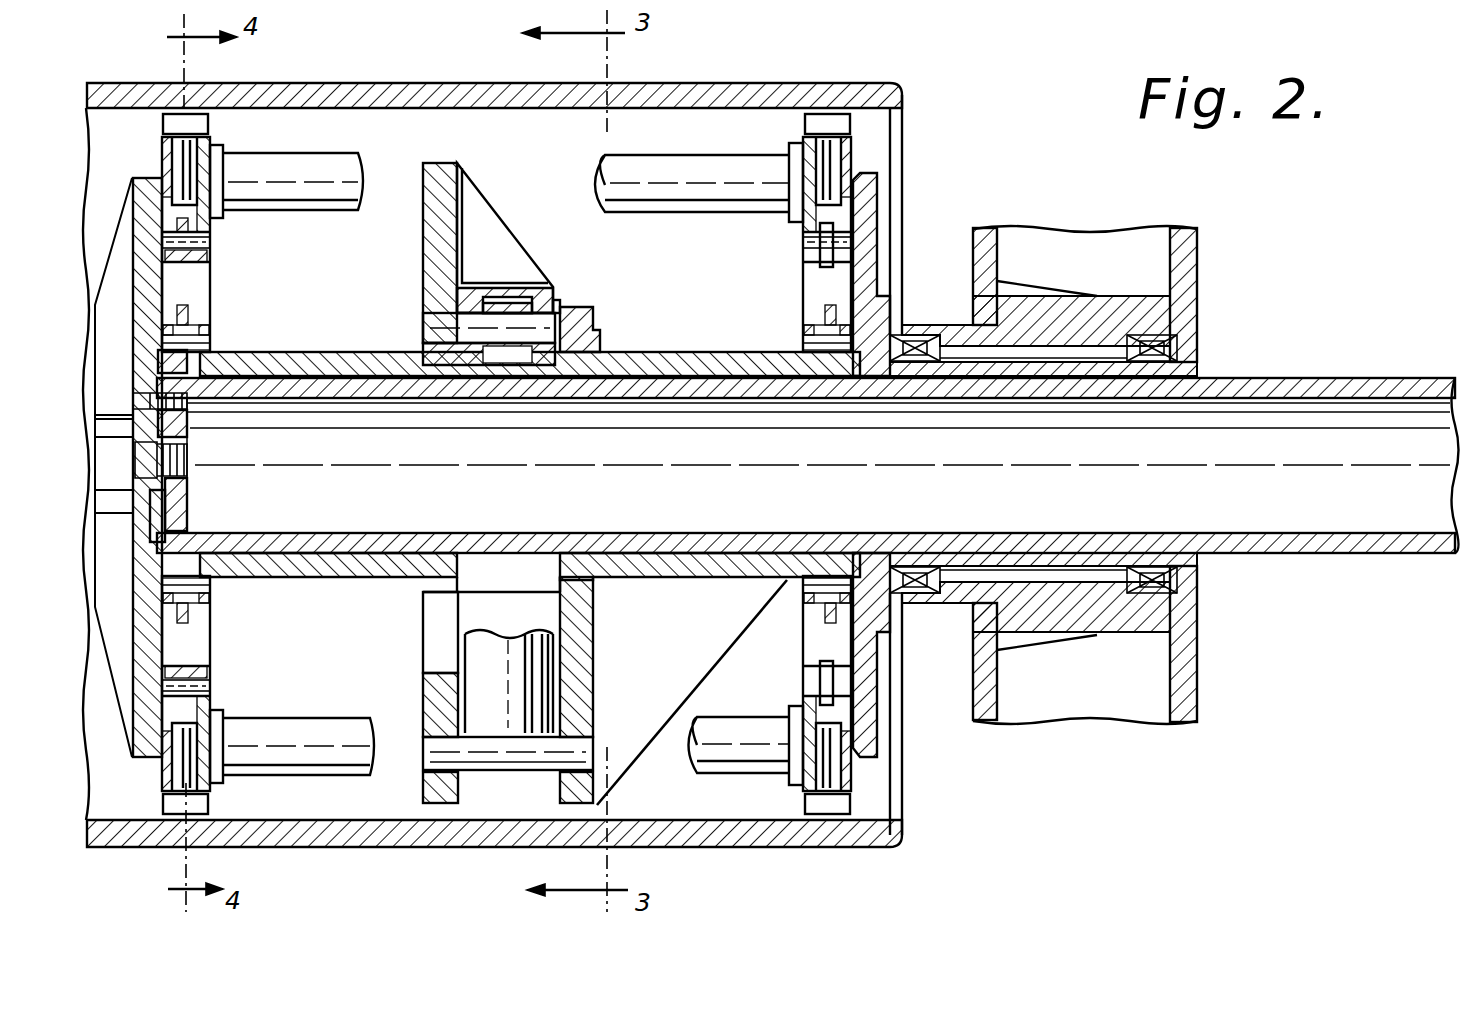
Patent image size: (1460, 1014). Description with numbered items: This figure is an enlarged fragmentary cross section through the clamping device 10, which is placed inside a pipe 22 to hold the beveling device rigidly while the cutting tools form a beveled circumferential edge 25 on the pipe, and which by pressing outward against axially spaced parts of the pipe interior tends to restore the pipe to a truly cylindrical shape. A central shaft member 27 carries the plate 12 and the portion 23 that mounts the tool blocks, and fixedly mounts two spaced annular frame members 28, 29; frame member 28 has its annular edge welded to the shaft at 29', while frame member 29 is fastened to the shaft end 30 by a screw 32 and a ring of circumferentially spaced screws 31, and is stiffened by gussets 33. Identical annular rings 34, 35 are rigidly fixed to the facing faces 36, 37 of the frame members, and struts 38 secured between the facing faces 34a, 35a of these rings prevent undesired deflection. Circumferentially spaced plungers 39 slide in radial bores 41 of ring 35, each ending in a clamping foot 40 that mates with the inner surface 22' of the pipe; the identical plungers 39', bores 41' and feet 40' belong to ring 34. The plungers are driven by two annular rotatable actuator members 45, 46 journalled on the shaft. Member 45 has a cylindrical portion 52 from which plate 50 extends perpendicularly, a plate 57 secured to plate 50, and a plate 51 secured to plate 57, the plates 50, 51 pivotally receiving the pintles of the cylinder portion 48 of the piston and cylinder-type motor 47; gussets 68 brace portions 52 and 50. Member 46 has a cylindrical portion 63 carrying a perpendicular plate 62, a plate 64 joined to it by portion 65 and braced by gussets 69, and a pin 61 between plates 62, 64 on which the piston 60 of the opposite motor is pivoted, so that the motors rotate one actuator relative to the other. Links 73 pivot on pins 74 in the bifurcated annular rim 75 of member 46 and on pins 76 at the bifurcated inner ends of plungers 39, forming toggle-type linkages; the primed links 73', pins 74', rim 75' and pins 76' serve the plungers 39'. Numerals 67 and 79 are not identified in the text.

The clamping device 10 is at (514, 135).
The plate 12 is at (1197, 256).
The pipe 22 is at (492, 448).
The inner surface 22' is at (656, 122).
The portion 23 is at (976, 270).
The beveled circumferential edge 25 is at (905, 100).
The central shaft member 27 is at (1392, 554).
The frame member 28 is at (876, 200).
The frame member 29 is at (473, 464).
The weld 29' is at (808, 460).
The shaft end 30 is at (187, 444).
The screws 31 is at (195, 420).
The screw 32 is at (187, 477).
The gussets 33 is at (128, 222).
The annular ring 34 is at (855, 150).
The facing face 34a is at (802, 232).
The annular ring 35 is at (216, 170).
The facing face 35a is at (200, 228).
The facing face 36 is at (818, 266).
The facing face 37 is at (196, 258).
The struts 38 is at (347, 158).
The plungers 39 is at (193, 457).
The plungers 39' is at (859, 471).
The clamping foot 40 is at (200, 434).
The clamping foot 40' is at (884, 444).
The radial bores 41 is at (154, 451).
The radial bores 41' is at (582, 452).
The rotatable actuator member 45 is at (620, 352).
The rotatable actuator member 46 is at (335, 352).
The piston and cylinder-type motor 47 is at (493, 625).
The cylinder portion 48 is at (552, 646).
The plate 50 is at (588, 700).
The plate 51 is at (432, 680).
The cylindrical portion 52 is at (718, 584).
The plate 57 is at (520, 610).
The piston 60 is at (522, 298).
The pin 61 is at (445, 315).
The plate 62 is at (440, 162).
The cylindrical portion 63 is at (318, 380).
The plate 64 is at (557, 303).
The portion 65 is at (514, 302).
The clutch face 67 is at (423, 258).
The gussets 68 is at (612, 775).
The gussets 69 is at (466, 182).
The links 73 is at (226, 462).
The links 73' is at (793, 469).
The pins 74 is at (233, 332).
The pins 74' is at (800, 325).
The bifurcated annular rim 75 is at (221, 593).
The bifurcated annular rim 75' is at (800, 609).
The pins 76 is at (220, 464).
The pins 76' is at (885, 219).
The pin 79 is at (576, 748).